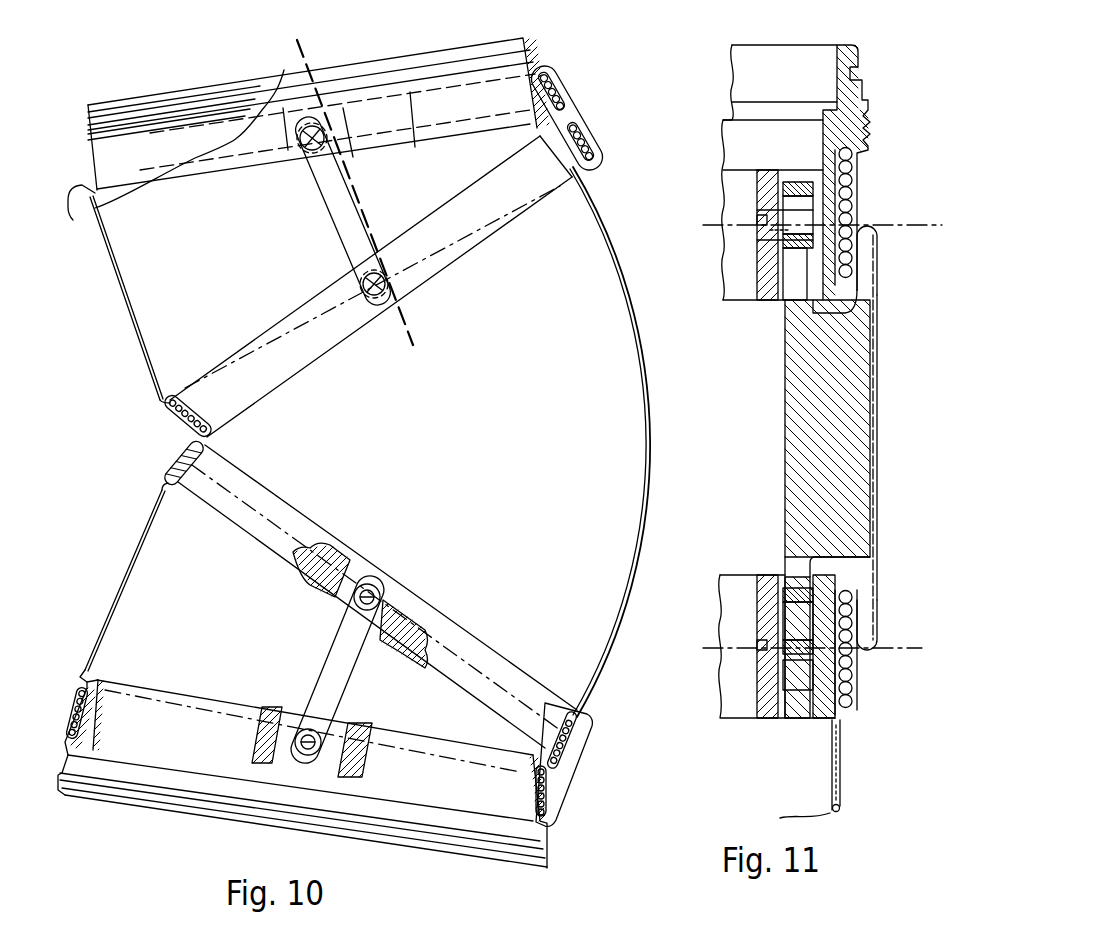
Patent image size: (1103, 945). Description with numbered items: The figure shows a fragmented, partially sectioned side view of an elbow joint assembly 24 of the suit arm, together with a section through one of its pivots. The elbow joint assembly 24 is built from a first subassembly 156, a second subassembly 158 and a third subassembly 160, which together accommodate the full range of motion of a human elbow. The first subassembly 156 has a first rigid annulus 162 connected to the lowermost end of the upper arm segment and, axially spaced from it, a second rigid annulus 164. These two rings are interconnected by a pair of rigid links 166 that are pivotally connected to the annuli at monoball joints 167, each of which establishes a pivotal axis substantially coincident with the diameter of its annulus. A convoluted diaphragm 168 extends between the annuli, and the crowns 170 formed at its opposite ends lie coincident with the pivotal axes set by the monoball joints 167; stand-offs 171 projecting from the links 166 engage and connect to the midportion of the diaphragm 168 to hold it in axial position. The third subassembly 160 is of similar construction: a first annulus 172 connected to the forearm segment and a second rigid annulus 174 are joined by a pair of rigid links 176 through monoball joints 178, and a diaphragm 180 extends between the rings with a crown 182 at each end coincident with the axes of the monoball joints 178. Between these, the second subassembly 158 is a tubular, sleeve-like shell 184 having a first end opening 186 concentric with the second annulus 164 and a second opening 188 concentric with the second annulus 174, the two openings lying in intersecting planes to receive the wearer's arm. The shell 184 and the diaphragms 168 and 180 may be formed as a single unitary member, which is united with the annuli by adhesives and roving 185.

In FIG. 10, the elbow joint assembly 24 is at (634, 262).
In FIG. 10, the first subassembly 156 is at (74, 128).
In FIG. 10, the second subassembly 158 is at (630, 618).
In FIG. 10, the third subassembly 160 is at (116, 503).
In FIG. 10, the first rigid annulus 162 is at (200, 104).
In FIG. 11, the first rigid annulus 162 is at (862, 95).
In FIG. 10, the second rigid annulus 164 is at (256, 345).
In FIG. 11, the second rigid annulus 164 is at (744, 710).
In FIG. 10, the rigid links 166 is at (318, 215).
In FIG. 11, the rigid links 166 is at (785, 418).
In FIG. 10, the monoball joints 167 is at (300, 120).
In FIG. 11, the monoball joints 167 is at (792, 192).
In FIG. 10, the diaphragm 168 is at (118, 297).
In FIG. 11, the diaphragm 168 is at (880, 365).
In FIG. 10, the crowns 170 is at (78, 190).
In FIG. 11, the crowns 170 is at (867, 226).
In FIG. 10, the stand-offs 171 is at (378, 210).
In FIG. 11, the stand-offs 171 is at (878, 412).
In FIG. 10, the first annulus 172 is at (157, 752).
In FIG. 10, the second rigid annulus 174 is at (294, 568).
In FIG. 10, the rigid links 176 is at (330, 680).
In FIG. 10, the monoball joints 178 is at (384, 578).
In FIG. 10, the diaphragm 180 is at (567, 786).
In FIG. 10, the crown 182 is at (165, 475).
In FIG. 10, the sleeve-like shell 184 is at (641, 378).
In FIG. 11, the roving 185 is at (857, 162).
In FIG. 10, the first end opening 186 is at (306, 366).
In FIG. 10, the second opening 188 is at (250, 480).